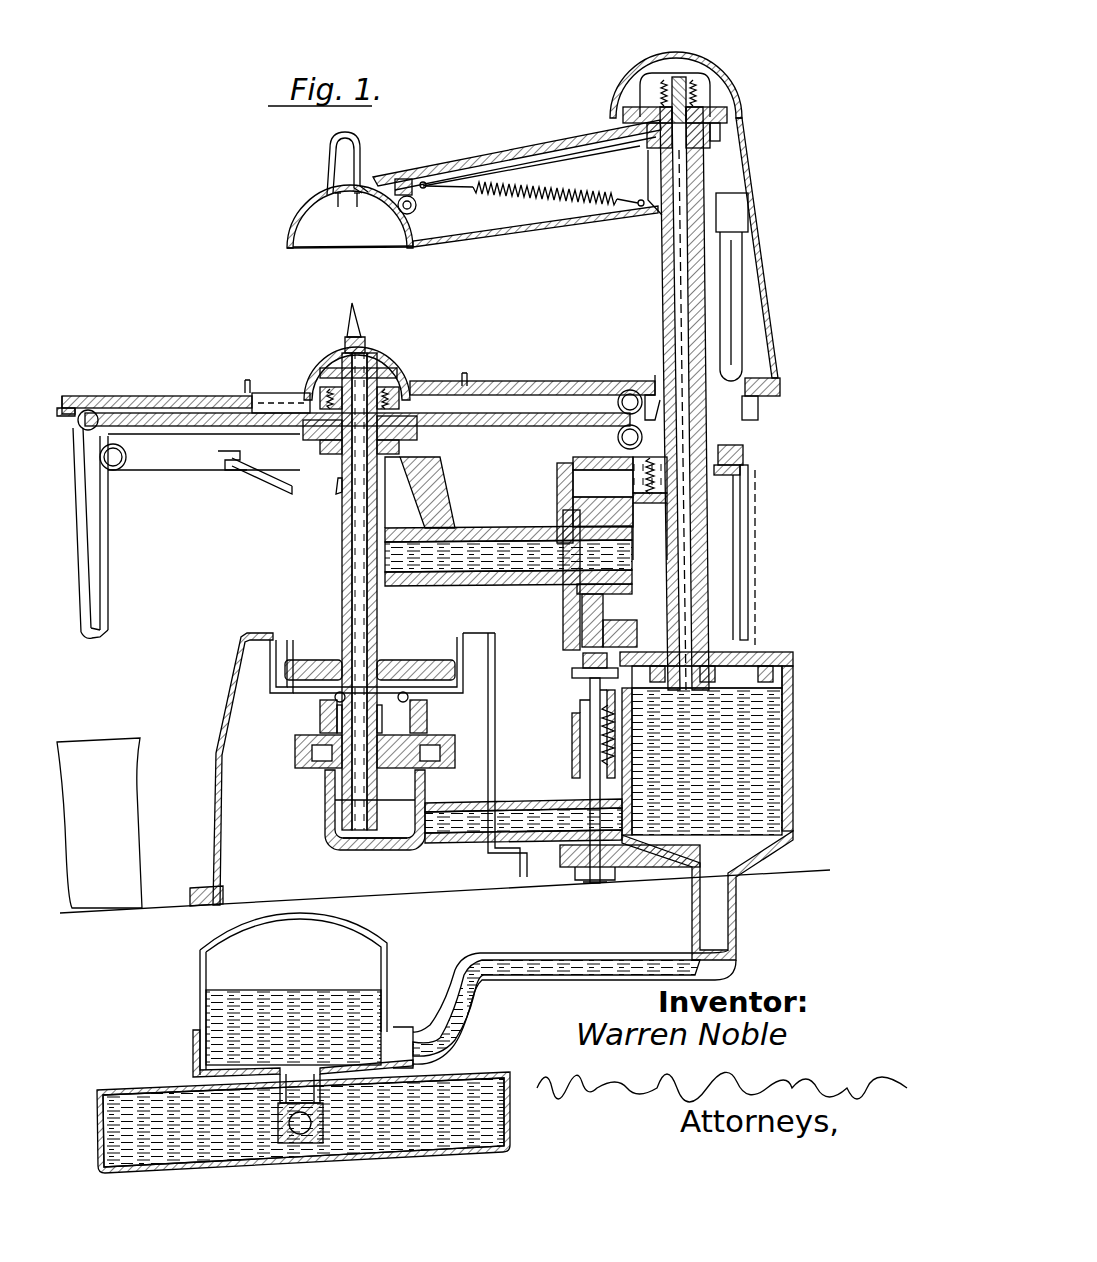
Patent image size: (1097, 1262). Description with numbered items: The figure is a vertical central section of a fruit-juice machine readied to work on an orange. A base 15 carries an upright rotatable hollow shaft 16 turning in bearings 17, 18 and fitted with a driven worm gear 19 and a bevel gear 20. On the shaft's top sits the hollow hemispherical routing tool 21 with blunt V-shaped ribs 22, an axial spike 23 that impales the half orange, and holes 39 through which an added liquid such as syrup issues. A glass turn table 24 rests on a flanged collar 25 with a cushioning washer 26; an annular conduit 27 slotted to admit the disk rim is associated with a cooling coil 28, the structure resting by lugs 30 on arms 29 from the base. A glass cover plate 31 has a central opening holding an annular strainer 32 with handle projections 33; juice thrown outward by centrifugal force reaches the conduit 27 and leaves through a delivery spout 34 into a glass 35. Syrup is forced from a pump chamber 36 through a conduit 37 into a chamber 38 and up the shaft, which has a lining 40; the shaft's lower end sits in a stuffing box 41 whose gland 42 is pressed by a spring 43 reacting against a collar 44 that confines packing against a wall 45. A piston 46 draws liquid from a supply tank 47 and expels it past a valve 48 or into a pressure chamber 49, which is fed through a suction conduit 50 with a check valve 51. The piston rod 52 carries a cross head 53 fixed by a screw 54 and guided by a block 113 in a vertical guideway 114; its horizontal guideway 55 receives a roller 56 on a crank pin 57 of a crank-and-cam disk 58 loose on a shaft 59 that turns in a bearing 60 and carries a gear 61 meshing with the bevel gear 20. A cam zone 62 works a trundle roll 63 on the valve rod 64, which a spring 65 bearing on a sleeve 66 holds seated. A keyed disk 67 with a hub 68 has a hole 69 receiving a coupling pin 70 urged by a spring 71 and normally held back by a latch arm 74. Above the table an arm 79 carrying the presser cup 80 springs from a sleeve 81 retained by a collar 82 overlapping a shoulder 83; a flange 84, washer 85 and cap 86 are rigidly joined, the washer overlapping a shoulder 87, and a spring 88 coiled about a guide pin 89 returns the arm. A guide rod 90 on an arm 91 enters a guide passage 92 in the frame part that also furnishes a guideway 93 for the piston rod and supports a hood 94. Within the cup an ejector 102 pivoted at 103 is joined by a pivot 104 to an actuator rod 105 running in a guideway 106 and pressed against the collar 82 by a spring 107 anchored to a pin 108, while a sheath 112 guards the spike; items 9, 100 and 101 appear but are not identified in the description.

The needle 9 is at (575, 900).
The base 15 is at (227, 688).
The hollow shaft 16 is at (345, 538).
The ball bearing 17 is at (335, 698).
The bearing 18 is at (390, 447).
The worm gear 19 is at (300, 672).
The bevel gear 20 is at (340, 495).
The routing tool 21 is at (405, 368).
The V-shaped ribs 22 is at (408, 385).
The spike 23 is at (360, 325).
The turn table 24 is at (503, 396).
The flanged collar 25 is at (452, 426).
The cushioning washer 26 is at (335, 432).
The annular conduit 27 is at (80, 425).
The coil 28 is at (188, 460).
The arms 29 is at (262, 476).
The lugs 30 is at (228, 463).
The cover plate 31 is at (150, 395).
The strainer 32 is at (268, 393).
The handle projections 33 is at (245, 382).
The delivery spout 34 is at (75, 545).
The glass 35 is at (128, 832).
The pump chamber 36 is at (793, 835).
The conduit 37 is at (507, 805).
The chamber 38 is at (336, 815).
The holes 39 is at (320, 378).
The lining 40 is at (352, 576).
The stuffing box 41 is at (352, 838).
The gland 42 is at (338, 800).
The spring 43 is at (312, 760).
The collar 44 is at (296, 752).
The wall 45 is at (322, 716).
The piston 46 is at (760, 650).
The supply tank 47 is at (508, 1130).
The valve 48 is at (605, 882).
The pressure chamber 49 is at (365, 1010).
The suction conduit 50 is at (290, 1112).
The check valve 51 is at (328, 1118).
The piston rod 52 is at (748, 530).
The cross head 53 is at (735, 495).
The screw 54 is at (743, 452).
The horizontal guideway 55 is at (643, 504).
The roller 56 is at (665, 505).
The crank pin 57 is at (655, 505).
The crank disk 58 is at (605, 628).
The shaft 59 is at (545, 580).
The bearing 60 is at (520, 530).
The gear 61 is at (415, 500).
The cam zone 62 is at (583, 660).
The trundle roll 63 is at (575, 675).
The valve rod 64 is at (590, 720).
The spring 65 is at (580, 738).
The sleeve 66 is at (580, 762).
The drive disk 67 is at (565, 632).
The hub 68 is at (632, 580).
The hole 69 is at (557, 490).
The coupling pin 70 is at (555, 472).
The spring 71 is at (640, 470).
The latch arm 74 is at (588, 470).
The arm 79 is at (457, 168).
The presser cup 80 is at (292, 230).
The sleeve 81 is at (660, 225).
The collar 82 is at (720, 140).
The shoulder 83 is at (650, 160).
The flange 84 is at (728, 112).
The washer 85 is at (722, 102).
The cap 86 is at (710, 85).
The shoulder 87 is at (712, 132).
The spring 88 is at (690, 58).
The guide pin 89 is at (674, 80).
The guide rod 90 is at (738, 270).
The arm 91 is at (742, 210).
The guide passage 92 is at (758, 405).
The guideway 93 is at (652, 380).
The hood 94 is at (768, 290).
The hood base 100 is at (295, 253).
The pin 101 is at (338, 207).
The ejector 102 is at (360, 190).
The pivot 103 is at (417, 205).
The pivot 104 is at (412, 179).
The actuator rod 105 is at (543, 152).
The guideway 106 is at (630, 145).
The spring 107 is at (558, 200).
The anchor pin 108 is at (622, 218).
The sheath 112 is at (326, 158).
The block 113 is at (748, 472).
The vertical guideway 114 is at (756, 560).